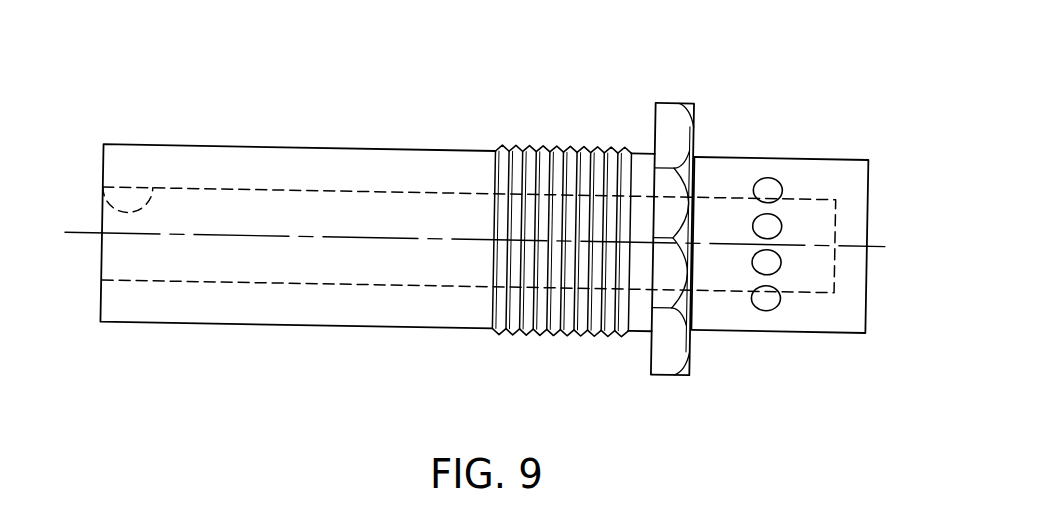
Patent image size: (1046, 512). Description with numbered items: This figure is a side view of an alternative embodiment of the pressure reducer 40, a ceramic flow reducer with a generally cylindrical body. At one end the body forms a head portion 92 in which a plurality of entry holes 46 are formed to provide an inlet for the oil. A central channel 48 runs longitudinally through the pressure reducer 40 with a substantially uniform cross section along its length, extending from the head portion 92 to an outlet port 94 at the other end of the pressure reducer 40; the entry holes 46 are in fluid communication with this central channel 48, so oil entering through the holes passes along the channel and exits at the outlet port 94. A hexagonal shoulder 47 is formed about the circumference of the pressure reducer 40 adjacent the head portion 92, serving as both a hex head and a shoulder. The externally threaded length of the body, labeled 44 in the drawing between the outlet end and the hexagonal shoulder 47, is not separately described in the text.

The pressure reducer 40 is at (608, 84).
The threaded portion 44 is at (550, 338).
The entry holes 46 is at (777, 171).
The hexagonal shoulder 47 is at (699, 352).
The central channel 48 is at (285, 202).
The head portion 92 is at (818, 160).
The outlet port 94 is at (102, 199).